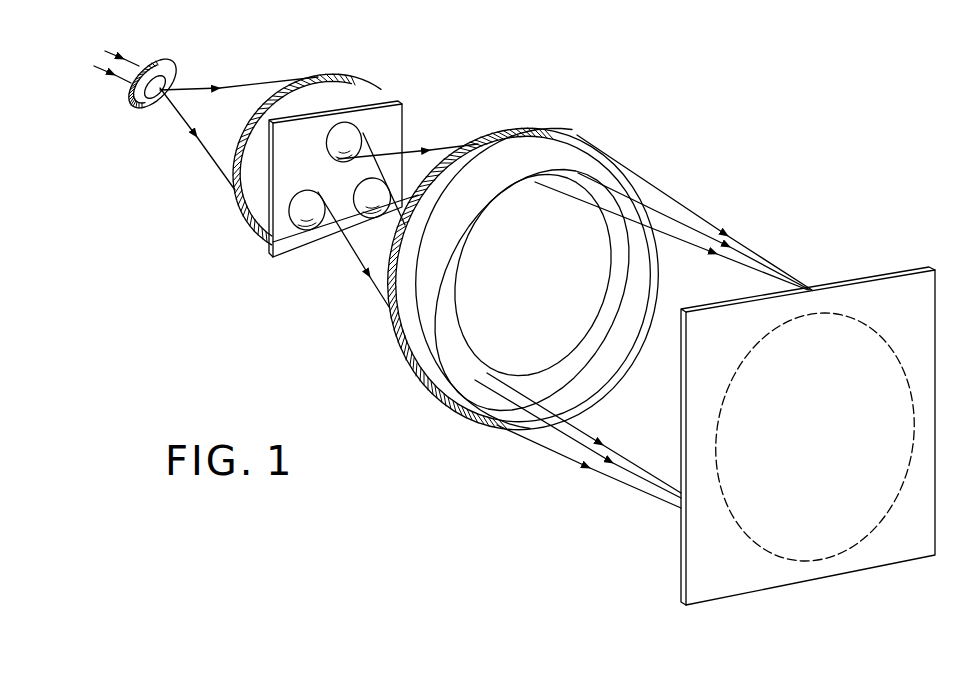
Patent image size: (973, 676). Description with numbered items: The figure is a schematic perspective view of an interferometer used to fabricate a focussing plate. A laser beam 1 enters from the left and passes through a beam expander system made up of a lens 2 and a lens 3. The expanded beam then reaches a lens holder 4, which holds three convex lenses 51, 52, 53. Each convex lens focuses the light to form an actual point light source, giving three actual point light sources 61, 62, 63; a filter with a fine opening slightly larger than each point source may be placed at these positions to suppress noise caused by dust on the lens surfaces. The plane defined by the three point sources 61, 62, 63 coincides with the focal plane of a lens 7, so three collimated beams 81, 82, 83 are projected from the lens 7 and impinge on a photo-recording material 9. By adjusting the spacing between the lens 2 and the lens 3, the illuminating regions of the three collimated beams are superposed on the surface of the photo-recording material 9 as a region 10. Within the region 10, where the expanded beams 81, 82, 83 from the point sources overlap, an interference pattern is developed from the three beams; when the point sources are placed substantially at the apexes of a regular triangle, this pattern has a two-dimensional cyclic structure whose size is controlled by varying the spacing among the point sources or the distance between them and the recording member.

The laser beam 1 is at (102, 72).
The beam expander system lens 2 is at (148, 103).
The beam expander system lens 3 is at (316, 76).
The lens holder 4 is at (280, 195).
The convex lens 51 is at (345, 126).
The convex lens 52 is at (297, 220).
The convex lens 53 is at (368, 187).
The point light source 61 is at (373, 155).
The point light source 62 is at (343, 232).
The point light source 63 is at (400, 222).
The lens 7 is at (492, 130).
The collimated beam 81 is at (667, 193).
The collimated beam 82 is at (690, 222).
The collimated beam 83 is at (680, 240).
The photo-recording material 9 is at (865, 293).
The region 10 is at (905, 362).